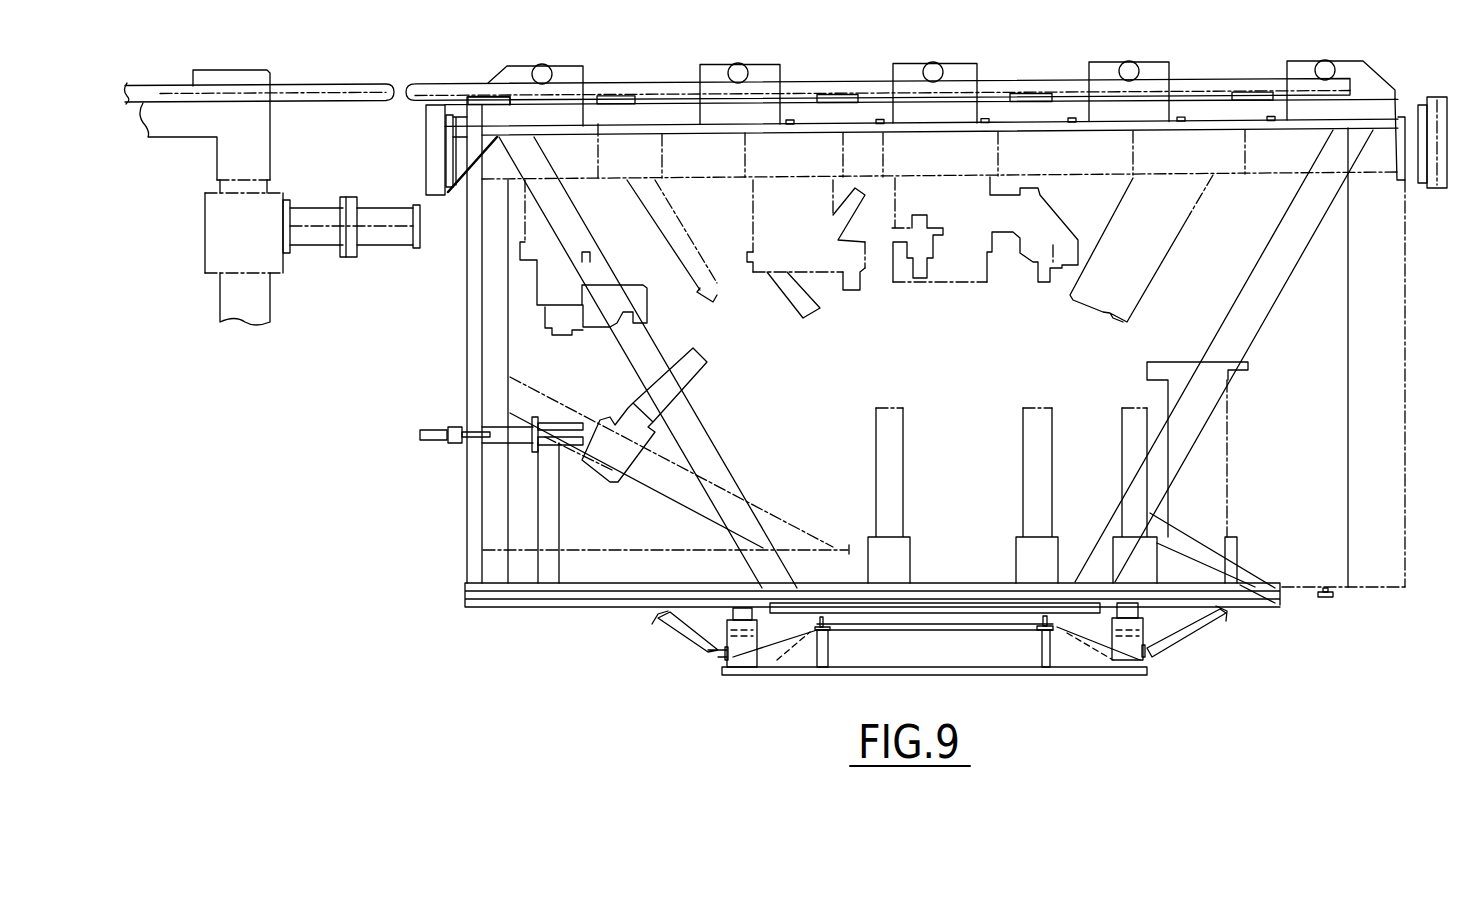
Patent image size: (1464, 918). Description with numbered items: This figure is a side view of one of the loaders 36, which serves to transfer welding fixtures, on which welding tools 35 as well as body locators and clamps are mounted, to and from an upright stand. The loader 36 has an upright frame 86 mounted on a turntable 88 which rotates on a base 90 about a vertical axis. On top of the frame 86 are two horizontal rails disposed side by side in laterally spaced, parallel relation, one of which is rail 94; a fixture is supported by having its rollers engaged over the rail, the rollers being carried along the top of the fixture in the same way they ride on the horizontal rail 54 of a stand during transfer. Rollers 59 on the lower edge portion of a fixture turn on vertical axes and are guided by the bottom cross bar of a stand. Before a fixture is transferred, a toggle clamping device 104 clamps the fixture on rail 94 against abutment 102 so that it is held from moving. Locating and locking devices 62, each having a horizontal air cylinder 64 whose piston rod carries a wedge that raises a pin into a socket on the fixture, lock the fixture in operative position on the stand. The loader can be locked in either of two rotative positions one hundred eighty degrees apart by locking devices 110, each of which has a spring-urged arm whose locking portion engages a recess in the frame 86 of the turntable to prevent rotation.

The welding tools 35 is at (713, 300).
The loader 36 is at (467, 338).
The horizontal rail 54 is at (307, 83).
The rollers 59 is at (1327, 600).
The locating and locking device 62 is at (303, 255).
The horizontal air cylinder 64 is at (377, 248).
The upright frame 86 is at (1273, 308).
The turntable 88 is at (890, 610).
The base 90 is at (973, 653).
The horizontal rail 94 is at (633, 81).
The abutment 102 is at (1420, 137).
The toggle clamping device 104 is at (420, 437).
The locking device 110 is at (720, 657).